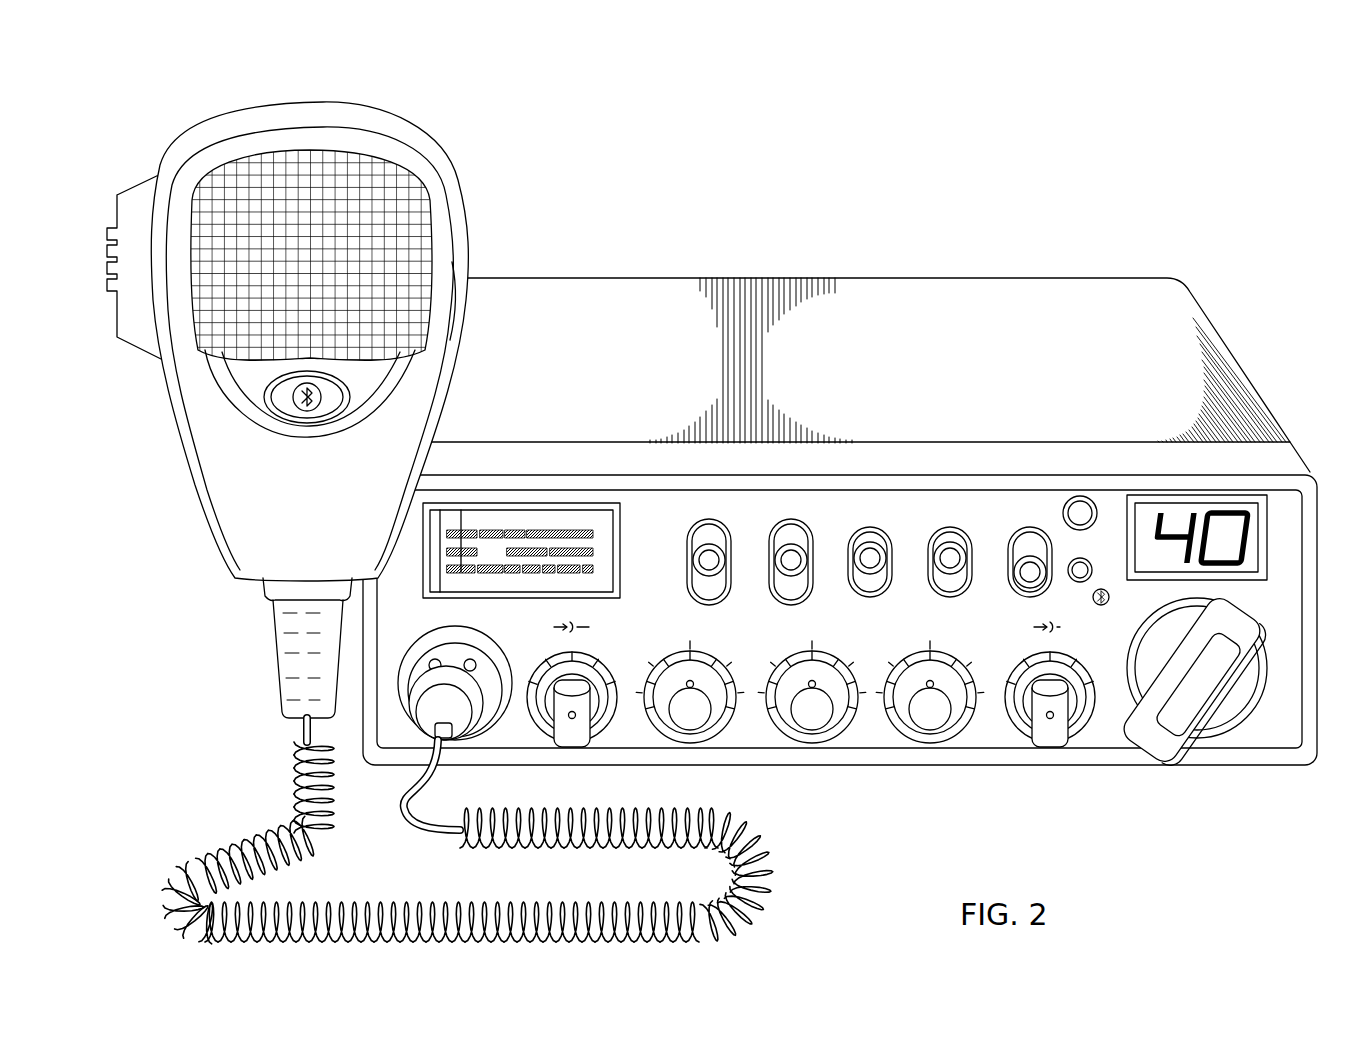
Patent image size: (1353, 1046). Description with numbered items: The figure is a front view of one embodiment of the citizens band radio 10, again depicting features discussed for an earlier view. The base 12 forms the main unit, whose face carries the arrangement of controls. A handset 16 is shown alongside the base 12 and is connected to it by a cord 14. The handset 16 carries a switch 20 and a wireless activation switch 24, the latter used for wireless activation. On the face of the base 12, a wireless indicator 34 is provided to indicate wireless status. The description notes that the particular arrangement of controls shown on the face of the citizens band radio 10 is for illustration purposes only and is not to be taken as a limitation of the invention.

The citizens band radio 10 is at (840, 493).
The base 12 is at (840, 608).
The cord 14 is at (745, 858).
The handset 16 is at (309, 386).
The switch 20 is at (140, 180).
The wireless activation switch 24 is at (264, 400).
The wireless indicator 34 is at (1120, 530).